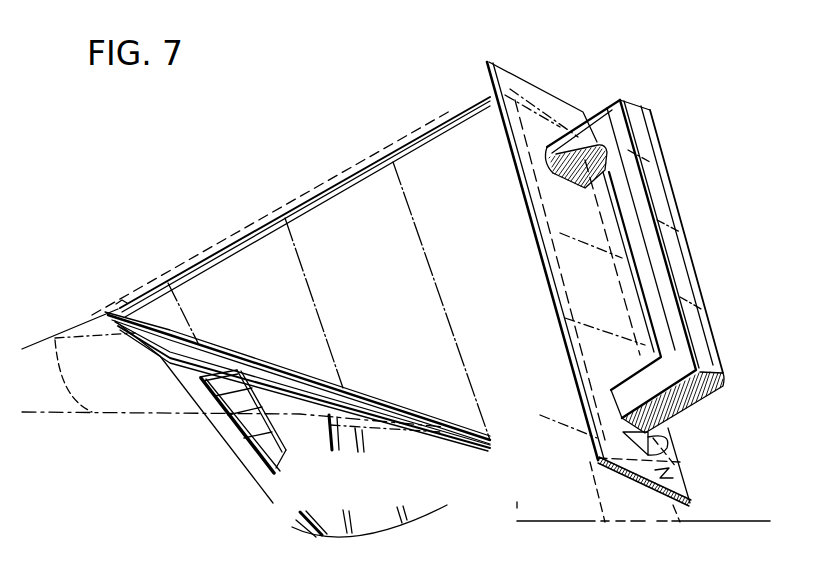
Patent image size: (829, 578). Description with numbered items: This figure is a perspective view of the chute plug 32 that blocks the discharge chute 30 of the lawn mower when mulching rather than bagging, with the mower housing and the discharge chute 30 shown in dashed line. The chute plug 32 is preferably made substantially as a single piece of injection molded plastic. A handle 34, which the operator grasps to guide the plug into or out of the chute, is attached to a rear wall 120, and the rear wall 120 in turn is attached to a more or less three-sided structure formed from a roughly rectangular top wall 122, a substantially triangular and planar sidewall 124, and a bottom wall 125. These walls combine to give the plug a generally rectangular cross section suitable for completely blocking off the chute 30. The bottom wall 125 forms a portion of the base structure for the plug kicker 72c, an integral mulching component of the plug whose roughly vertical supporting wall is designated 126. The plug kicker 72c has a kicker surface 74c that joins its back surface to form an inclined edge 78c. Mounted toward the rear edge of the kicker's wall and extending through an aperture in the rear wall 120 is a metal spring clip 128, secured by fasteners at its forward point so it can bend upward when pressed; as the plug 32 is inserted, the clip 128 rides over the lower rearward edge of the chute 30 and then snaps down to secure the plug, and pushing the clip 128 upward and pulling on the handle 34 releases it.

The discharge chute 30 is at (310, 198).
The chute plug 32 is at (333, 177).
The handle 34 is at (659, 181).
The plug kicker 72c is at (351, 510).
The kicker surface 74c is at (262, 437).
The inclined edge 78c is at (295, 531).
The rear wall 120 is at (543, 270).
The top wall 122 is at (415, 143).
The sidewall 124 is at (393, 313).
The bottom wall 125 is at (344, 405).
The supporting wall 126 is at (420, 516).
The spring clip 128 is at (672, 441).